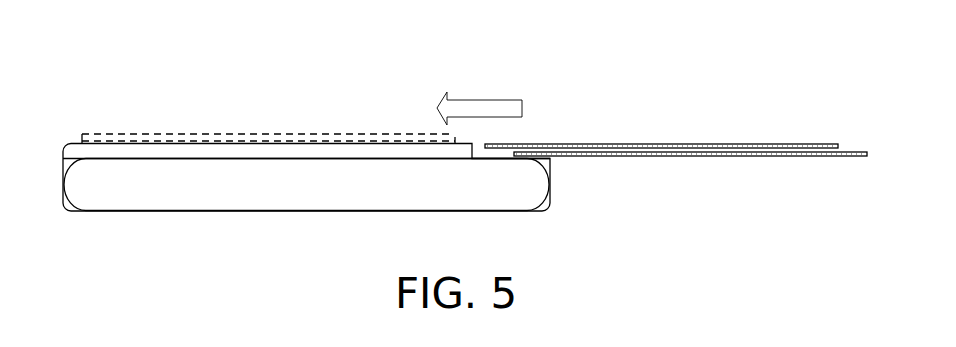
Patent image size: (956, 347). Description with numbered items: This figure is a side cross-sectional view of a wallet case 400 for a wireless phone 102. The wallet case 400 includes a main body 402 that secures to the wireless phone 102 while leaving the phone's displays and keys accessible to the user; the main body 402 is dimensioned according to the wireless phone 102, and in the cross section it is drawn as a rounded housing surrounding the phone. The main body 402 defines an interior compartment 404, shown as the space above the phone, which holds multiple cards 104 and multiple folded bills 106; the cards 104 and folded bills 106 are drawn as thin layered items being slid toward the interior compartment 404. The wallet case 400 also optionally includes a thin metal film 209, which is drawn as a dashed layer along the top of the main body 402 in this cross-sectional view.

The wallet case 400 is at (126, 76).
The main body 402 is at (550, 202).
The wireless phone 102 is at (368, 187).
The thin metal film 209 is at (142, 133).
The interior compartment 404 is at (388, 150).
The cards 104 is at (636, 143).
The folded bills 106 is at (717, 156).